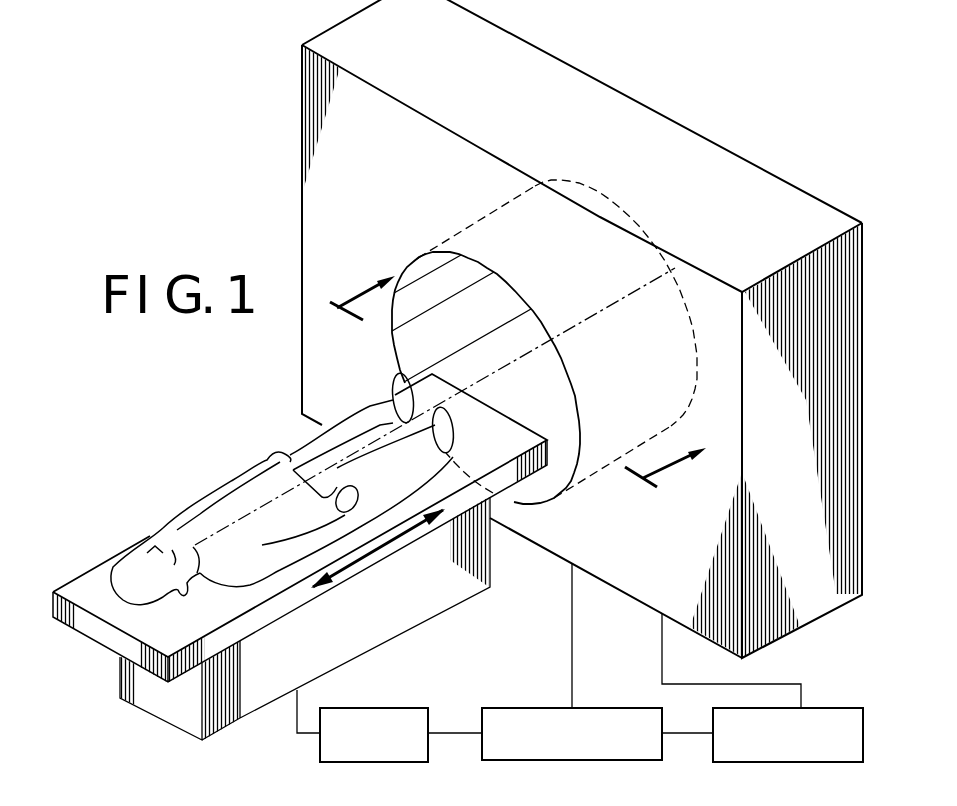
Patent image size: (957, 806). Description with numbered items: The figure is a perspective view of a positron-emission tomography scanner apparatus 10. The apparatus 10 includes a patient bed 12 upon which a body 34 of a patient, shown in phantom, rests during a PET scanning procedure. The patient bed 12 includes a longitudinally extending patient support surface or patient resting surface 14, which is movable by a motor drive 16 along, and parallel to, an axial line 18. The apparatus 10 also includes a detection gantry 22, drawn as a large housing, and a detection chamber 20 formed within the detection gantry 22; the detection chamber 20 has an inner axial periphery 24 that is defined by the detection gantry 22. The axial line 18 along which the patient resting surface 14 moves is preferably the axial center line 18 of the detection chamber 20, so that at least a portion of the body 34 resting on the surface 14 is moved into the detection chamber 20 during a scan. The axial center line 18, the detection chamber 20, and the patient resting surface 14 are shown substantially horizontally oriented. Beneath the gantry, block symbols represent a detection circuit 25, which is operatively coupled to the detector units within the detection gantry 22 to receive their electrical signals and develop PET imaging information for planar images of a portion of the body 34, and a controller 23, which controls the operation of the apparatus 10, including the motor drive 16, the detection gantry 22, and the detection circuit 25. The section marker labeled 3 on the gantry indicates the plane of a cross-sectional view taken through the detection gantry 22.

The positron-emission tomography (PET) scanner apparatus 10 is at (582, 336).
The detection gantry 22 is at (407, 162).
The detection chamber 20 is at (460, 358).
The inner axial periphery 24 is at (573, 420).
The axial line 18 is at (513, 362).
The section line 3- 3 is at (527, 369).
The patient bed 12 is at (300, 557).
The patient resting surface 14 is at (150, 537).
The body 34 is at (235, 490).
The motor drive 16 is at (390, 708).
The controller 23 is at (545, 708).
The detection circuit 25 is at (840, 708).